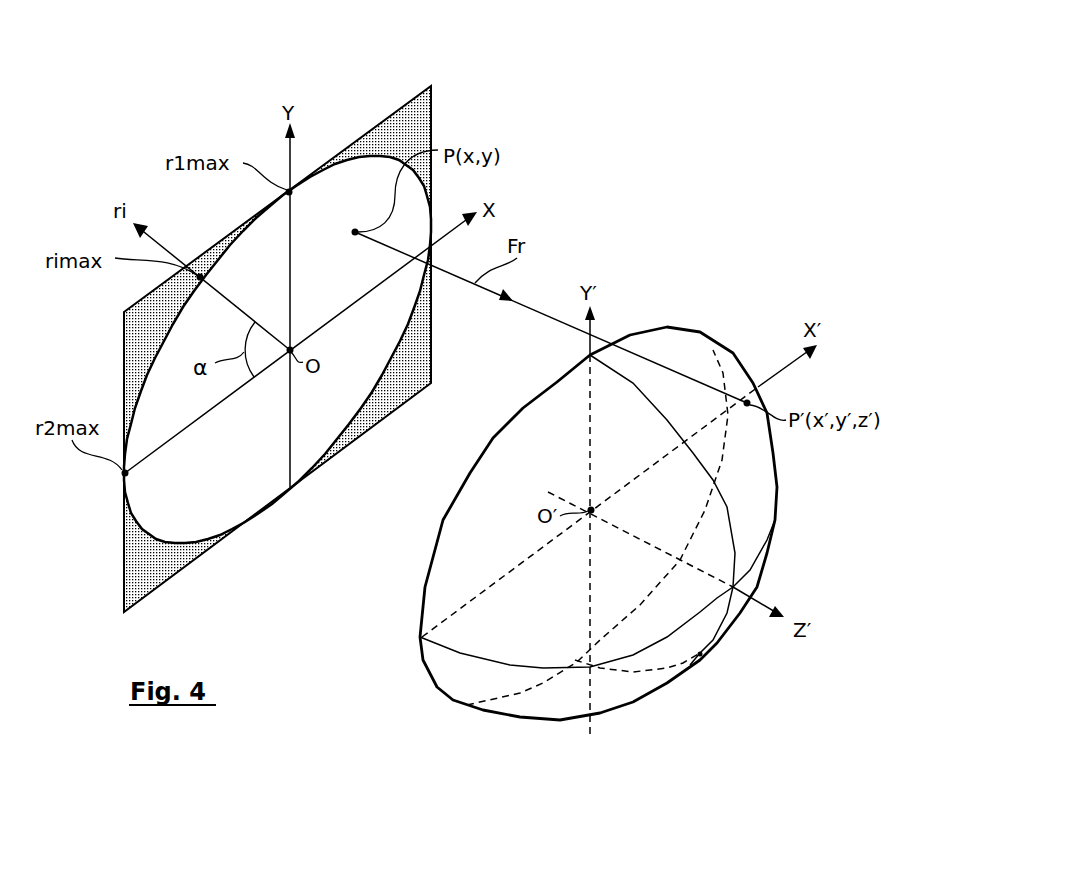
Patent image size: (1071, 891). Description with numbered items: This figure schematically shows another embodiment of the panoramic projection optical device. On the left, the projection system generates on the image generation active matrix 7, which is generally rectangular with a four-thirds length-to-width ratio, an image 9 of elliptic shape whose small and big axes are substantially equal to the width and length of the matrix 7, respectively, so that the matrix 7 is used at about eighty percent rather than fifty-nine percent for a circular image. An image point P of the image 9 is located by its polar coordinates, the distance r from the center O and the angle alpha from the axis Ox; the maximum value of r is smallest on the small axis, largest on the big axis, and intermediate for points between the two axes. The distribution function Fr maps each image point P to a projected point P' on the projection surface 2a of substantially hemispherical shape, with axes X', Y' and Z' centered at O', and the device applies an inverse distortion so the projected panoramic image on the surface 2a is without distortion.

The image generation active matrix 7 is at (130, 582).
The image of elliptic shape 9 is at (232, 267).
The projection surface 2a is at (662, 335).